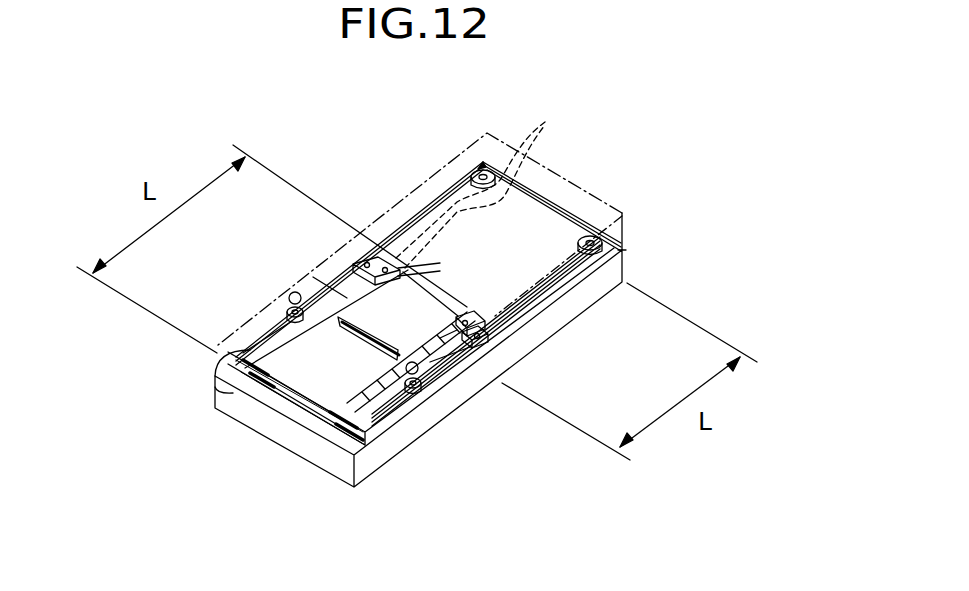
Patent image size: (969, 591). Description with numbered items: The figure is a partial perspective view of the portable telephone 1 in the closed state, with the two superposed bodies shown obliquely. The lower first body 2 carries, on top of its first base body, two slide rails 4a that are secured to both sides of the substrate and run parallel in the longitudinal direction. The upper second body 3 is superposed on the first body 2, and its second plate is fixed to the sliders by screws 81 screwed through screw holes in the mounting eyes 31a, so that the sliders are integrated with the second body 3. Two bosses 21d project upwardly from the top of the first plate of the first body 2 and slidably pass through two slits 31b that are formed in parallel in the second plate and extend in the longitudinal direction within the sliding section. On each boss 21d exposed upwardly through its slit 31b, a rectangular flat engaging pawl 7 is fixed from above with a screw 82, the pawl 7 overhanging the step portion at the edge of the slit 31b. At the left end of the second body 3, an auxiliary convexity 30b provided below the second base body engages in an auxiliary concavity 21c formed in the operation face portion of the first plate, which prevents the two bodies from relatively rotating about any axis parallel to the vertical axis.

The portable telephone 1 is at (657, 212).
The first body 2 is at (383, 460).
The second body 3 is at (568, 181).
The slide rail 4a is at (488, 184).
The engaging pawl 7 is at (395, 262).
The auxiliary concavity 21c is at (235, 392).
The boss 21d is at (357, 283).
The auxiliary convexity 30b is at (323, 430).
The mounting eye 31a is at (342, 264).
The slit 31b is at (283, 350).
The screw 81 is at (363, 264).
The screw 82 is at (385, 268).